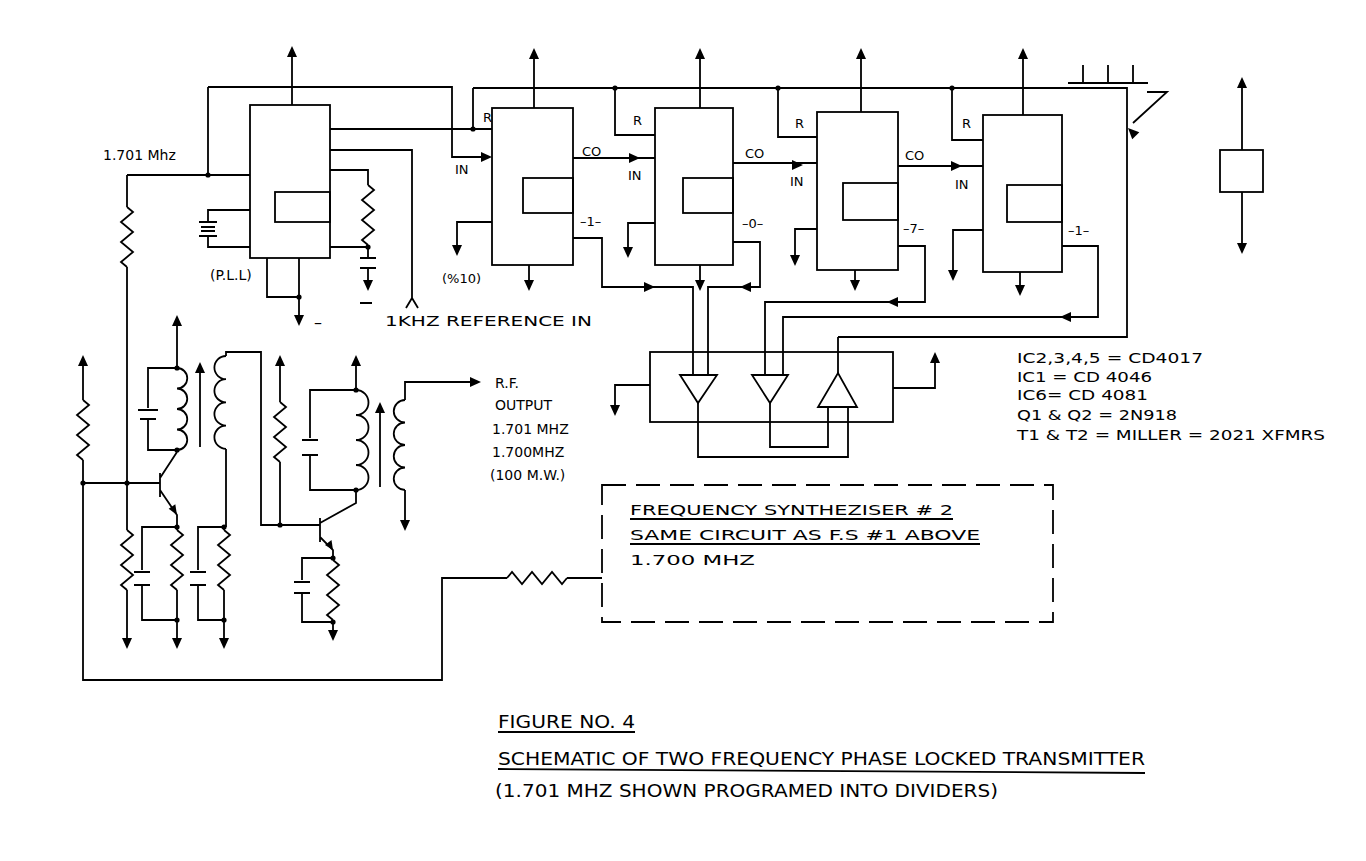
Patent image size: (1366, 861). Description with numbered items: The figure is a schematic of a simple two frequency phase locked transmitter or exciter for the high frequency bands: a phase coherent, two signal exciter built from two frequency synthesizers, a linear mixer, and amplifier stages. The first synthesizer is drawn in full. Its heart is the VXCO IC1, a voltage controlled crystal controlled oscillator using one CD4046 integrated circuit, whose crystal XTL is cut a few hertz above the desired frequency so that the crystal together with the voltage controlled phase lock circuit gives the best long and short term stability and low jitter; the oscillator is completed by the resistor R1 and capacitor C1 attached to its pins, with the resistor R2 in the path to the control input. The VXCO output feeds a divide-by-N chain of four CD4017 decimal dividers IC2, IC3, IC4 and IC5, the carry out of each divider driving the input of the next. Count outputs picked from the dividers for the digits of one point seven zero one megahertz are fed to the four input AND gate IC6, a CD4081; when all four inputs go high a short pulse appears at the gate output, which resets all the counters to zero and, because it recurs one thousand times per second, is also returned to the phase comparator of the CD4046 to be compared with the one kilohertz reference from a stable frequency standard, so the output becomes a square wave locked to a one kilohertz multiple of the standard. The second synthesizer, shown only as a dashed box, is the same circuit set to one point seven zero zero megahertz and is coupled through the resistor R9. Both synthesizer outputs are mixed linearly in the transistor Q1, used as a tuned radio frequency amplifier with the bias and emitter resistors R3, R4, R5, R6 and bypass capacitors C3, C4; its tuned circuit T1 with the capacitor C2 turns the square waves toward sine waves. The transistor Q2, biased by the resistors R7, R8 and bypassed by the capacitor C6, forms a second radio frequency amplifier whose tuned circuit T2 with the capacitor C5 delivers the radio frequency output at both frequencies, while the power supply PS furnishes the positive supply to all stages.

The VXCO IC1 is at (290, 152).
The decimal divider IC2 is at (532, 173).
The decimal divider IC3 is at (694, 169).
The decimal divider IC4 is at (857, 171).
The decimal divider IC5 is at (1022, 172).
The four input AND gate IC6 is at (785, 398).
The crystal XTL is at (207, 223).
The resistor 100K R1 is at (364, 217).
The resistor 220K R2 is at (152, 329).
The resistor 22K R3 is at (78, 419).
The resistor 4.7K R4 is at (110, 566).
The resistor R5 is at (181, 586).
The resistor 4.7 R6 is at (237, 586).
The resistor 22K R7 is at (291, 441).
The resistor 220 R8 is at (349, 598).
The resistor 220K R9 is at (537, 576).
The capacitor 1 C1 is at (377, 280).
The capacitor 100PF C2 is at (157, 411).
The capacitor .01 C3 is at (155, 573).
The capacitor .01 C4 is at (207, 573).
The capacitor 100PF C5 is at (329, 440).
The capacitor .01 C6 is at (302, 590).
The transistor Q1 is at (177, 489).
The transistor Q2 is at (341, 524).
The tuned circuit T1 is at (246, 420).
The tuned circuit T2 is at (416, 443).
The power supply PS is at (1275, 168).